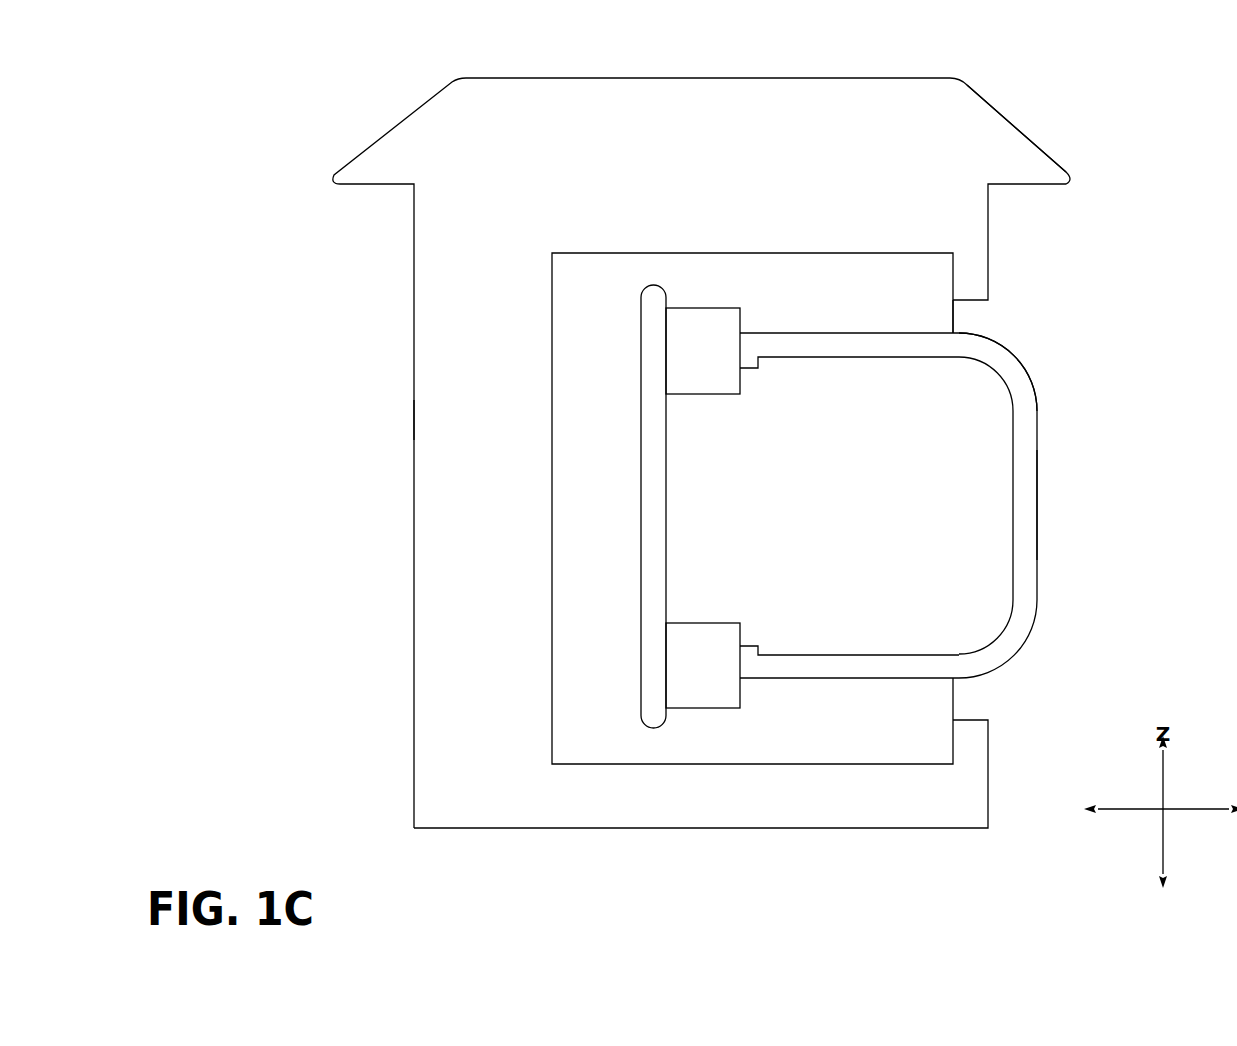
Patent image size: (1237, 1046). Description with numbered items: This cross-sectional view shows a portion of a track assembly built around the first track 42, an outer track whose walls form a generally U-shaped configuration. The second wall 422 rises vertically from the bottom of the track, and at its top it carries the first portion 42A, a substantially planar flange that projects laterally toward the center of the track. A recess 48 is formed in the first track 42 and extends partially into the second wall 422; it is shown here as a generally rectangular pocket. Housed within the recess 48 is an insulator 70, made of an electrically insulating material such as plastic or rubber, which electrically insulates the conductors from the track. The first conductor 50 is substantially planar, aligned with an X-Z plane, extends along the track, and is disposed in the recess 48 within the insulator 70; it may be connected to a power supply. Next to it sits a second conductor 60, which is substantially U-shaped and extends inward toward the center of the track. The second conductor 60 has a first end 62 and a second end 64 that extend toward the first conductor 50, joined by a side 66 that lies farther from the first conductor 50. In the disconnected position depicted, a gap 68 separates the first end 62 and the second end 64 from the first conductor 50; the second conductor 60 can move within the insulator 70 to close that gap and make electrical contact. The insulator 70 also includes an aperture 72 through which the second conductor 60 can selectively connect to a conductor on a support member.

The first track 42 is at (672, 70).
The first portion 42A is at (996, 151).
The second wall 422 is at (392, 421).
The recess 48 is at (552, 260).
The first conductor 50 is at (650, 553).
The second conductor 60 is at (1043, 480).
The first end 62 is at (767, 345).
The second end 64 is at (770, 668).
The side 66 is at (1025, 527).
The gap 68 is at (703, 306).
The insulator 70 is at (899, 318).
The aperture 72 is at (1006, 318).